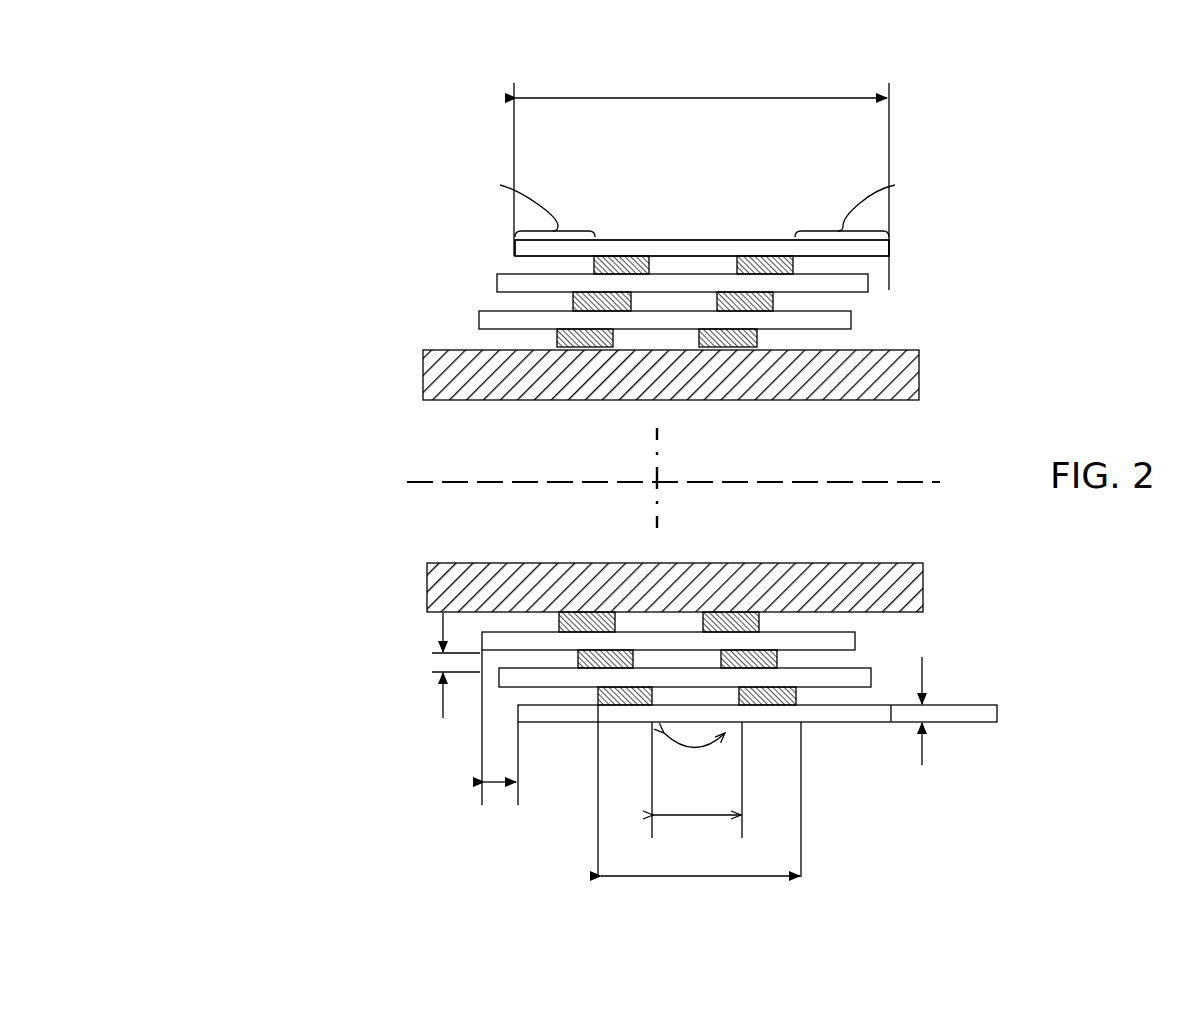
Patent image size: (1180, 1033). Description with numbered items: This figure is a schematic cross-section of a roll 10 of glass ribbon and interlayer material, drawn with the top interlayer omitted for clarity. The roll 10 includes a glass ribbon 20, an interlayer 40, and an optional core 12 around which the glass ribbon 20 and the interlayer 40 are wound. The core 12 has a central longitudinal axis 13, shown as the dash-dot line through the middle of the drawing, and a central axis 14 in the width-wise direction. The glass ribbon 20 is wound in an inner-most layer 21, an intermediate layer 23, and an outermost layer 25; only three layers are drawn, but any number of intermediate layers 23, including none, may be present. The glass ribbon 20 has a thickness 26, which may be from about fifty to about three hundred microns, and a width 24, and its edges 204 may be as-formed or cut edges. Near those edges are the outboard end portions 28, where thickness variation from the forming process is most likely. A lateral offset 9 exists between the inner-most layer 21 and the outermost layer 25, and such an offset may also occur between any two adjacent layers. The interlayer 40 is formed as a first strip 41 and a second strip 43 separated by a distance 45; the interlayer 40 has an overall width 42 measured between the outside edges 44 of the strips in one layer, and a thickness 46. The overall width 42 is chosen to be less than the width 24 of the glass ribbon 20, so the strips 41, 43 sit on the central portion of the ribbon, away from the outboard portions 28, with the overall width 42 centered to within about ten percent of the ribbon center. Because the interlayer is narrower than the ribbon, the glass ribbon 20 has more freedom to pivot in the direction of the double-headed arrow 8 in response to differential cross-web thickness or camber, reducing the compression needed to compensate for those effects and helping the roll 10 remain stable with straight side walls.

The double-headed arrow 8 is at (720, 742).
The lateral offset 9 is at (500, 785).
The roll 10 is at (364, 774).
The core 12 is at (443, 583).
The central longitudinal axis 13 is at (430, 482).
The central axis 14 is at (656, 438).
The glass ribbon 20 is at (859, 639).
The inner-most layer 21 is at (677, 322).
The intermediate layer 23 is at (679, 285).
The width 24 is at (810, 98).
The outermost layer 25 is at (714, 250).
The thickness 26 is at (922, 672).
The outboard end portions 28 is at (500, 185).
The interlayer 40 is at (759, 336).
The first strip 41 is at (565, 331).
The overall width 42 is at (742, 876).
The second strip 43 is at (760, 706).
The outside edges 44 is at (593, 262).
The distance 45 is at (698, 818).
The thickness 46 is at (443, 697).
The edges 204 is at (892, 246).